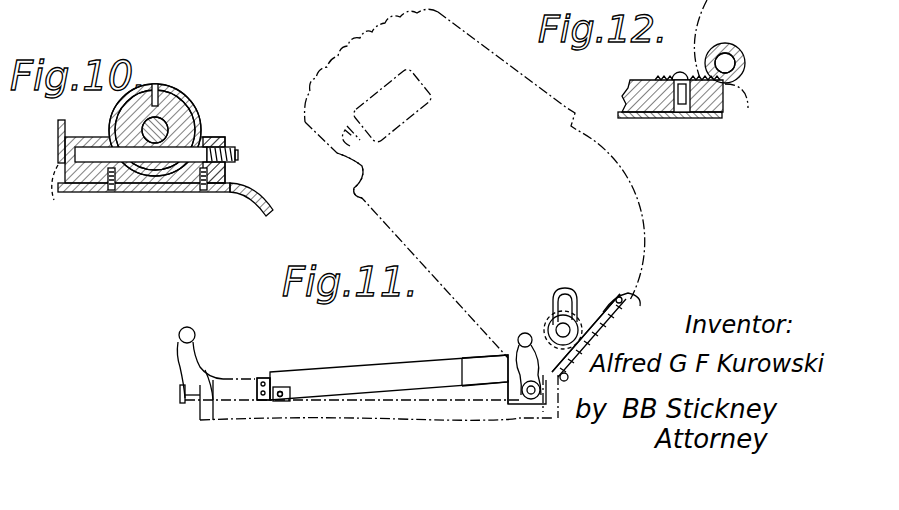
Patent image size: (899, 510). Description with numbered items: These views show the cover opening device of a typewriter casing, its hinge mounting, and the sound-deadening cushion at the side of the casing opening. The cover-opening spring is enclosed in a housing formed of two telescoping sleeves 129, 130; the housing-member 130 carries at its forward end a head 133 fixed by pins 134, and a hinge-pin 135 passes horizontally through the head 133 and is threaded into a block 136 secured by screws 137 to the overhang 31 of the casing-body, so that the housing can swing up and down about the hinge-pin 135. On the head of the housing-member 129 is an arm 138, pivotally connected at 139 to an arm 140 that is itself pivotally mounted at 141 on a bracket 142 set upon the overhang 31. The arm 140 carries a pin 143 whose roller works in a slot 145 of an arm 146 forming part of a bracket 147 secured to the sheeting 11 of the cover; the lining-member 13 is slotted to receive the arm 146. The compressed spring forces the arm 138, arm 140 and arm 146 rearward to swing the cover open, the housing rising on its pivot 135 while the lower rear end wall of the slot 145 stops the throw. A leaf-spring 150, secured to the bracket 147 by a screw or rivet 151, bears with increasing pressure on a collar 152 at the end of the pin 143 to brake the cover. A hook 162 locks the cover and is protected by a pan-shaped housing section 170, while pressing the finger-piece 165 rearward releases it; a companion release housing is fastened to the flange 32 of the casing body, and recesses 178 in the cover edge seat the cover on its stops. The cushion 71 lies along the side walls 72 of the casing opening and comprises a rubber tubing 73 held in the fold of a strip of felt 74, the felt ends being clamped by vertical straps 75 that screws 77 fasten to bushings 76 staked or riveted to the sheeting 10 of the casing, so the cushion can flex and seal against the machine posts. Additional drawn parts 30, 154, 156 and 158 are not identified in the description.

In FIG. 11, the sheeting of the casing 10 is at (234, 431).
In FIG. 12, the sheeting of the casing 10 is at (650, 118).
In FIG. 11, the sheeting of the cover 11 is at (638, 228).
In FIG. 12, the cover-lining-member 13 is at (636, 86).
In FIG. 10, the guide strip 30 is at (266, 206).
In FIG. 10, the overhang 31 is at (134, 192).
In FIG. 10, the flange 32 is at (58, 130).
In FIG. 12, the cushions 71 is at (765, 94).
In FIG. 12, the side walls of the opening 72 is at (726, 112).
In FIG. 12, the rubber tubing 73 is at (740, 45).
In FIG. 12, the strip of felt 74 is at (720, 44).
In FIG. 12, the vertical straps 75 is at (664, 78).
In FIG. 12, the bushings 76 is at (682, 112).
In FIG. 12, the screws 77 is at (680, 72).
In FIG. 11, the housing-member 129 is at (478, 356).
In FIG. 10, the housing-member 130 is at (188, 96).
In FIG. 11, the housing-member 130 is at (356, 372).
In FIG. 10, the head 133 is at (118, 118).
In FIG. 10, the pins 134 is at (155, 84).
In FIG. 10, the hinge-pin 135 is at (238, 157).
In FIG. 11, the hinge-pin 135 is at (283, 400).
In FIG. 10, the block 136 is at (214, 140).
In FIG. 11, the block 136 is at (291, 393).
In FIG. 10, the screws 137 is at (110, 192).
In FIG. 11, the arm 138 is at (512, 384).
In FIG. 11, the pivot 139 is at (519, 336).
In FIG. 11, the arm 140 is at (533, 324).
In FIG. 11, the pivot 141 is at (531, 400).
In FIG. 11, the bracket 142 is at (512, 404).
In FIG. 11, the pin 143 is at (562, 314).
In FIG. 11, the slot 145 is at (573, 288).
In FIG. 11, the arm 146 is at (594, 312).
In FIG. 11, the bracket 147 is at (634, 304).
In FIG. 11, the leaf-spring 150 is at (605, 318).
In FIG. 11, the screw or rivet 151 is at (620, 300).
In FIG. 11, the collar 152 is at (548, 318).
In FIG. 10, the hub 154 is at (168, 124).
In FIG. 11, the bracket 156 is at (267, 378).
In FIG. 11, the rivet 158 is at (258, 378).
In FIG. 11, the hook 162 is at (354, 130).
In FIG. 11, the finger-piece 165 is at (180, 393).
In FIG. 11, the housing section 170 is at (412, 124).
In FIG. 11, the recesses 178 is at (357, 196).